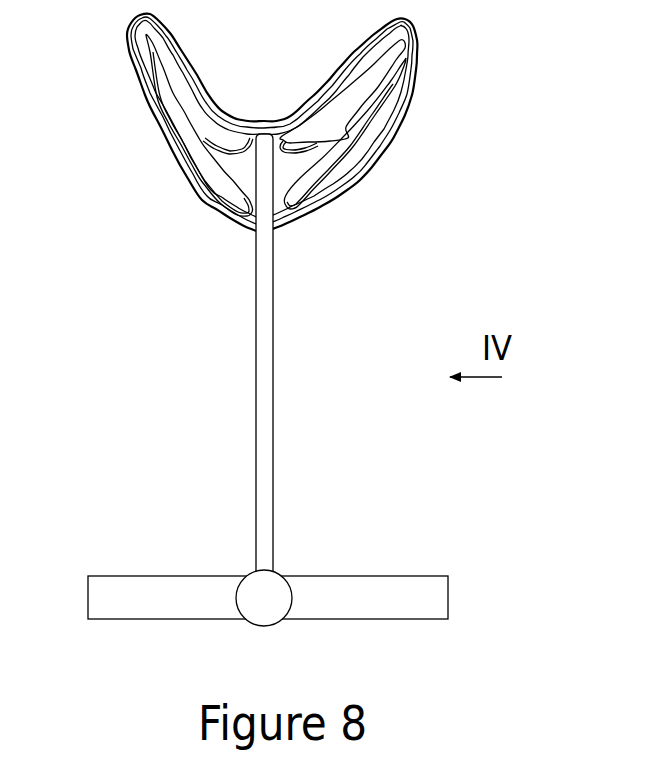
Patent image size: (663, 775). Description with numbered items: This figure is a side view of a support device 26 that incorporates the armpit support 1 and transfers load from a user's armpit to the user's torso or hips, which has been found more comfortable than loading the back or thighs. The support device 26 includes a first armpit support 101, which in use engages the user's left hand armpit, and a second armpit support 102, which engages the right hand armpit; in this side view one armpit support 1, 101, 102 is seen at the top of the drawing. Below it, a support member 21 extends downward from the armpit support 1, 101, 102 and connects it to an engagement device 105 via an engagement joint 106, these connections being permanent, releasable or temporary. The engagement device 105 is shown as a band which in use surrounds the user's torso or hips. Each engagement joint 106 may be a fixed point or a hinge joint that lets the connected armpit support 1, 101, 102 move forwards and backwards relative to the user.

The armpit support 1 is at (365, 122).
The first armpit support 101 is at (272, 122).
The second armpit support 102 is at (415, 92).
The support member 21 is at (238, 293).
The support device 26 is at (133, 252).
The engagement device 105 is at (373, 577).
The engagement joint 106 is at (250, 571).